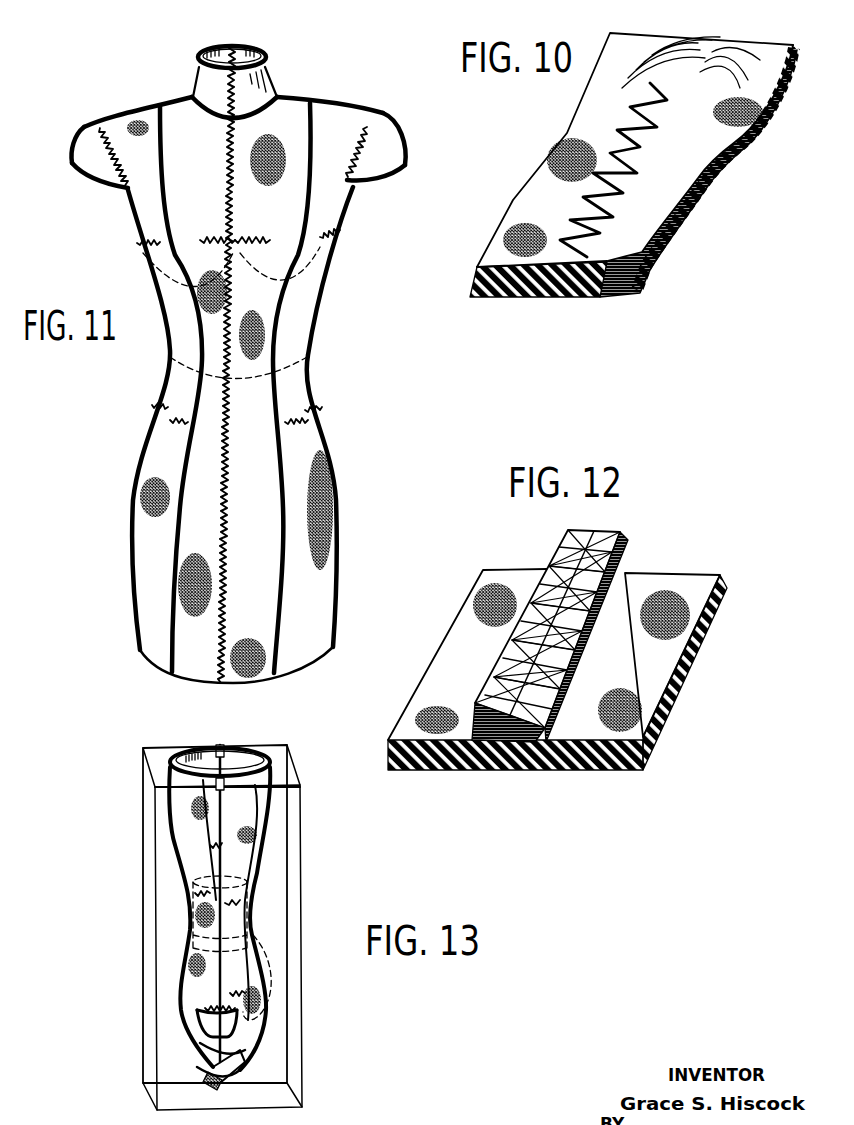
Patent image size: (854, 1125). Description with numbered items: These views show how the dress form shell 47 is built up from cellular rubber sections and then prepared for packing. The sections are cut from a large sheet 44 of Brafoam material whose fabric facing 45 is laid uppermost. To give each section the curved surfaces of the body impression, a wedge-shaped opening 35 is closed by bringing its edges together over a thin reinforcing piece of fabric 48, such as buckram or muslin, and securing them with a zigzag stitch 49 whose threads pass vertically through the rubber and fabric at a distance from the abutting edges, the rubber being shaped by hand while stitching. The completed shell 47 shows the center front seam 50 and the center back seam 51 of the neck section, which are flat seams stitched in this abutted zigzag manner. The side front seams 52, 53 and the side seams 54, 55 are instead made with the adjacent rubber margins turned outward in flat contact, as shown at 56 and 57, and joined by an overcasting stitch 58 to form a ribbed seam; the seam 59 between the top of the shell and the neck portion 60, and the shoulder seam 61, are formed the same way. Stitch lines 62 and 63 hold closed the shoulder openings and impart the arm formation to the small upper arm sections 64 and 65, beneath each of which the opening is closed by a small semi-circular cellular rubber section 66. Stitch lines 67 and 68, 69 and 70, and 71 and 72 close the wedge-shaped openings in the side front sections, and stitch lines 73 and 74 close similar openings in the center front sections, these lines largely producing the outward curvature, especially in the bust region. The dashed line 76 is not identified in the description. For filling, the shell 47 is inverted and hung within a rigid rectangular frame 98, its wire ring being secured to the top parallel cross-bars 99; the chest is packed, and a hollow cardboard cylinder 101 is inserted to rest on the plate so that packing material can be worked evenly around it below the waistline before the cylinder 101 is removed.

In FIG. 10, the wedge-shaped opening 35 is at (645, 130).
In FIG. 10, the sheet of Brafoam material 44 is at (493, 297).
In FIG. 12, the sheet of Brafoam material 44 is at (590, 770).
In FIG. 10, the fabric facing 45 is at (482, 265).
In FIG. 12, the fabric facing 45 is at (572, 770).
In FIG. 11, the dress form shell 47 is at (152, 480).
In FIG. 13, the dress form shell 47 is at (168, 876).
In FIG. 10, the reinforcing fabric piece 48 is at (667, 258).
In FIG. 10, the zigzag stitch 49 is at (620, 132).
In FIG. 11, the center front seam 50 is at (226, 474).
In FIG. 13, the center front seam 50 is at (275, 840).
In FIG. 11, the center back seam of the neck section 51 is at (240, 50).
In FIG. 11, the side front seam 52 is at (172, 560).
In FIG. 11, the side front seam 53 is at (276, 550).
In FIG. 13, the side front seam 53 is at (260, 834).
In FIG. 11, the side seam 54 is at (132, 566).
In FIG. 11, the side seam 55 is at (336, 570).
In FIG. 13, the side seam 55 is at (222, 843).
In FIG. 12, the outwardly turned rubber margin 56 is at (478, 703).
In FIG. 12, the outwardly turned rubber margin 57 is at (560, 716).
In FIG. 12, the overcasting stitch 58 is at (598, 645).
In FIG. 11, the neck seam 59 is at (212, 120).
In FIG. 13, the neck seam 59 is at (243, 1055).
In FIG. 11, the neck portion 60 is at (262, 82).
In FIG. 13, the neck portion 60 is at (230, 1082).
In FIG. 11, the shoulder seam 61 is at (140, 112).
In FIG. 13, the shoulder seam 61 is at (205, 1068).
In FIG. 11, the stitch line 62 is at (117, 160).
In FIG. 11, the stitch line 63 is at (360, 133).
In FIG. 11, the small upper arm section 64 is at (72, 158).
In FIG. 11, the small upper arm section 65 is at (410, 148).
In FIG. 13, the small upper arm section 65 is at (200, 1045).
In FIG. 11, the semi-circular cellular rubber section 66 is at (105, 185).
In FIG. 13, the semi-circular cellular rubber section 66 is at (208, 1010).
In FIG. 11, the stitch line 67 is at (140, 242).
In FIG. 11, the stitch line 68 is at (333, 234).
In FIG. 11, the stitch line 69 is at (153, 405).
In FIG. 11, the stitch line 70 is at (318, 408).
In FIG. 11, the stitch line 71 is at (172, 424).
In FIG. 11, the stitch line 72 is at (308, 424).
In FIG. 10, the stitch line 72 is at (585, 208).
In FIG. 11, the stitch line 73 is at (212, 236).
In FIG. 11, the stitch line 74 is at (256, 236).
In FIG. 13, the fold line 76 is at (272, 996).
In FIG. 13, the rigid rectangular frame 98 is at (300, 884).
In FIG. 13, the top parallel cross-bars 99 is at (166, 750).
In FIG. 13, the hollow cardboard cylinder 101 is at (232, 878).